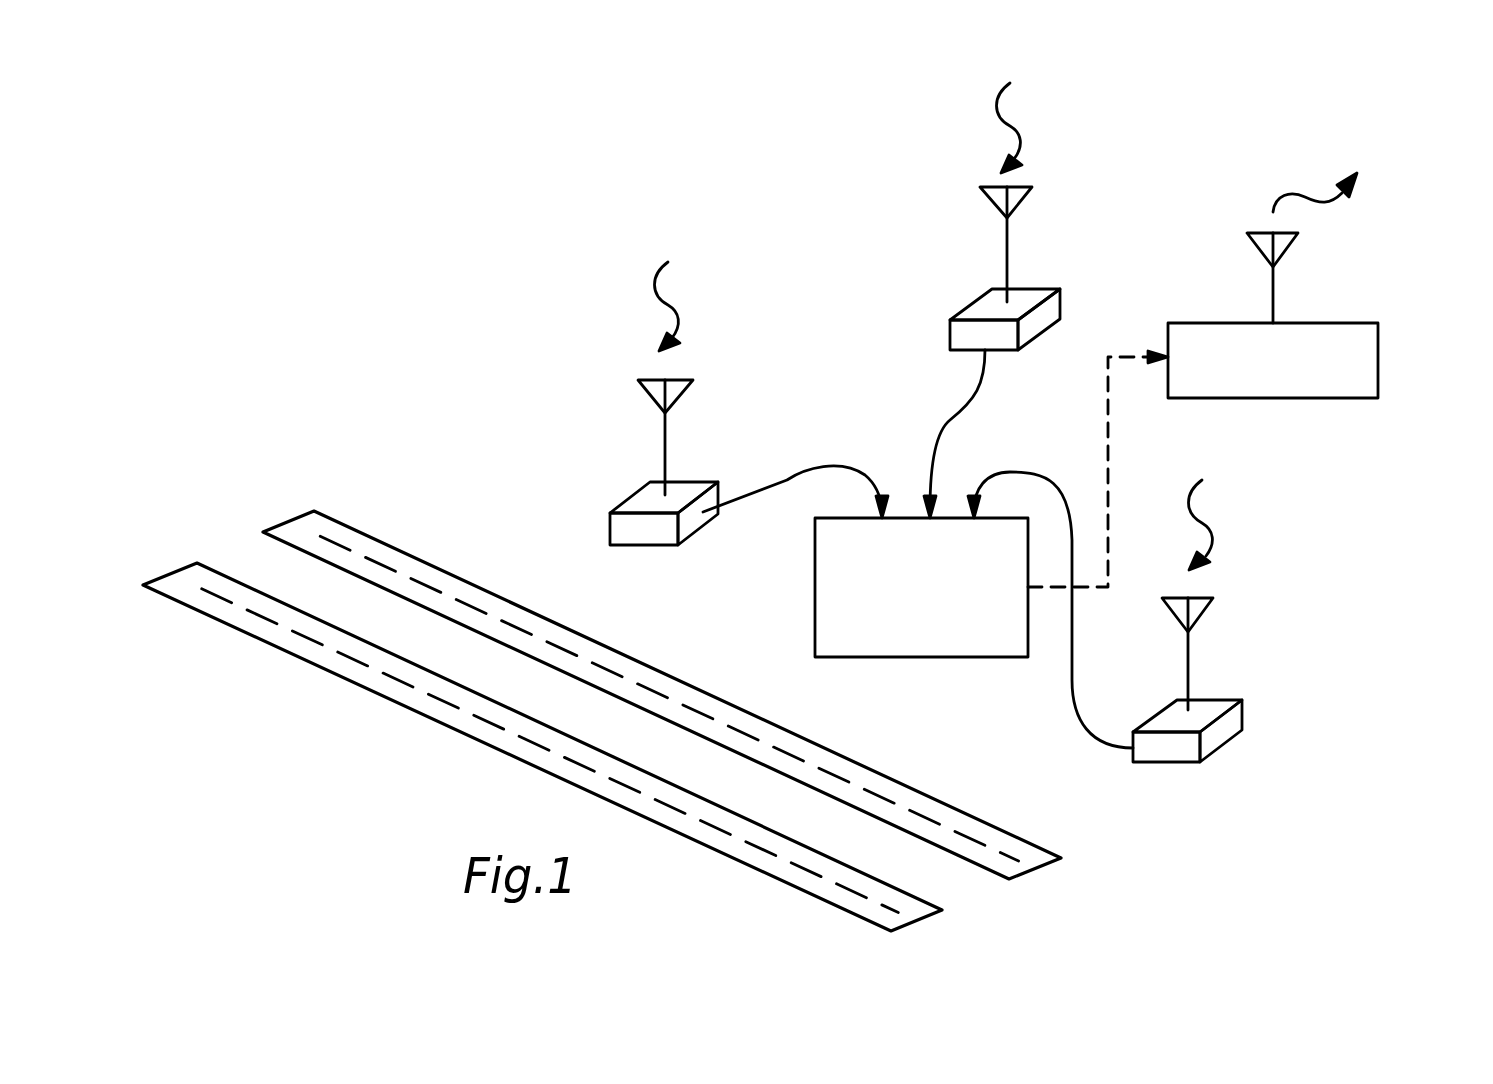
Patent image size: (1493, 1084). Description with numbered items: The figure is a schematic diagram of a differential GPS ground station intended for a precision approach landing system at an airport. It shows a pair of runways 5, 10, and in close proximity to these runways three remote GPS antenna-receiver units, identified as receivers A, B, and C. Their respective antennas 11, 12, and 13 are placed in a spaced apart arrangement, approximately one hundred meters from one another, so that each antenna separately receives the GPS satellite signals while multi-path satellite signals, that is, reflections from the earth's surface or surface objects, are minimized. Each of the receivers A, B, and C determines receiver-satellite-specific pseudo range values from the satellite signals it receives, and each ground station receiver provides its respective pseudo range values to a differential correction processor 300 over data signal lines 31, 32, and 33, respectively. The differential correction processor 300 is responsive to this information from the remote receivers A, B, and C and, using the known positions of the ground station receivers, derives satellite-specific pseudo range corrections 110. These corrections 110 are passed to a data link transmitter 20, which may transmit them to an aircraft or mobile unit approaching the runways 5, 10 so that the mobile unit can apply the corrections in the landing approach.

The runway 5 is at (172, 562).
The runway 10 is at (290, 510).
The antenna 11 is at (685, 392).
The antenna 12 is at (1027, 191).
The antenna 13 is at (1208, 603).
The GPS receiver A is at (622, 505).
The GPS receiver B is at (950, 328).
The GPS receiver C is at (1220, 728).
The data signal line 31 is at (793, 470).
The data signal line 32 is at (980, 410).
The data signal line 33 is at (1072, 710).
The differential correction processor 300 is at (815, 587).
The satellite-specific pseudo range corrections 110 is at (1120, 356).
The data link transmitter 20 is at (1378, 360).